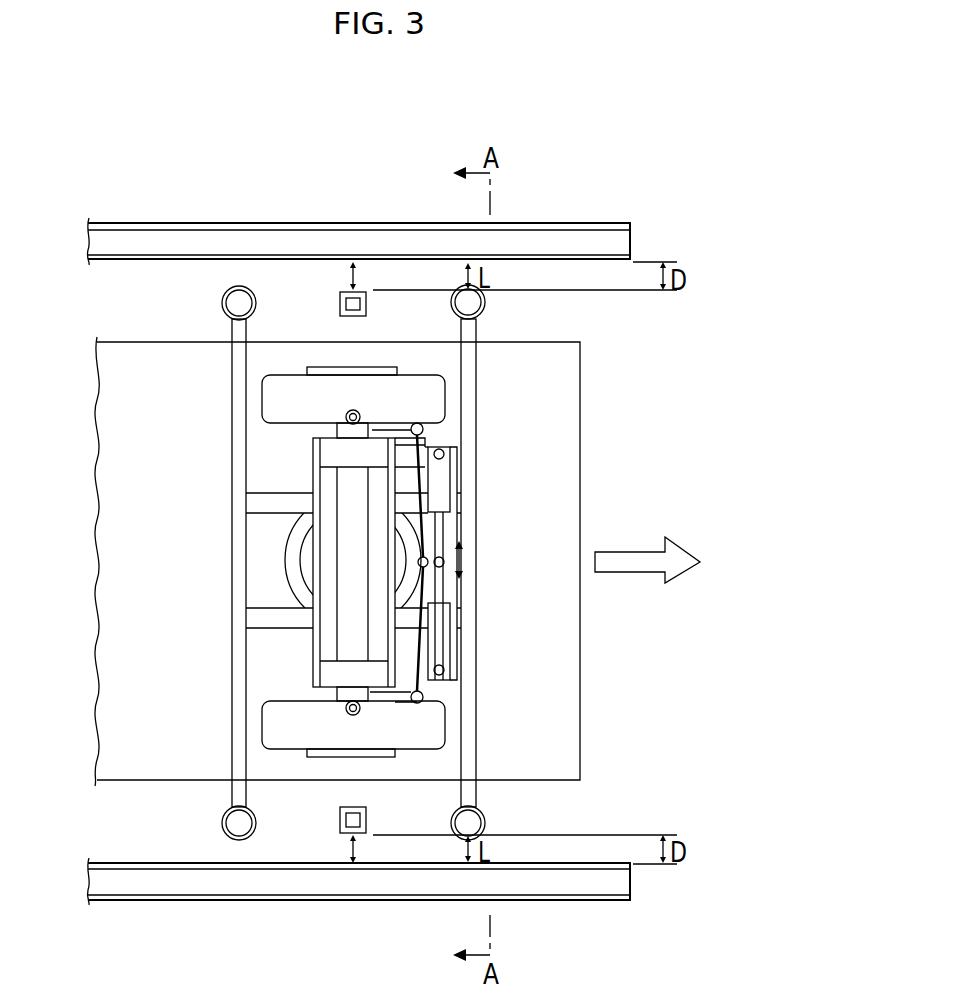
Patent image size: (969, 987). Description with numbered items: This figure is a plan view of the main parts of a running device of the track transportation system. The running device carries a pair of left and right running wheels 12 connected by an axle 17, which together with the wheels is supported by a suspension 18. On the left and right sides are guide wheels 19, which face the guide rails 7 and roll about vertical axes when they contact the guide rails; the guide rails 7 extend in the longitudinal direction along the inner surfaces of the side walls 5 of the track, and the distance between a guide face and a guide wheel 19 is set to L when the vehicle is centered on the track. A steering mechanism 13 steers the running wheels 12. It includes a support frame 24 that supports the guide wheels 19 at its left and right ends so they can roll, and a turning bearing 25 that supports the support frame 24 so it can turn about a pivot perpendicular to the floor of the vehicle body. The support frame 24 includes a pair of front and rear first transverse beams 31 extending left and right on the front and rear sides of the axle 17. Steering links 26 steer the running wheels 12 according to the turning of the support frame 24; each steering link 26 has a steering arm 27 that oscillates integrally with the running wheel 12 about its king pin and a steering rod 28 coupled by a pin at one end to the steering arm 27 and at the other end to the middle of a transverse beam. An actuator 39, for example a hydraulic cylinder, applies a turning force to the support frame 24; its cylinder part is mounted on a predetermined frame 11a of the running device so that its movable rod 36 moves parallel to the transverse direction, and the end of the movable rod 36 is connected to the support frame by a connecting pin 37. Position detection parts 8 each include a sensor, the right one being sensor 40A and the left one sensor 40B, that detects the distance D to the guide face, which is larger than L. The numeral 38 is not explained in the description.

The side wall 5 is at (359, 565).
The guide rail 7 is at (582, 240).
The position detection part 8 is at (347, 302).
The predetermined frame 11a is at (405, 455).
The running wheel 12 is at (285, 385).
The steering mechanism 13 is at (658, 499).
The axle 17 is at (348, 477).
The suspension 18 is at (330, 671).
The guide wheel 19 is at (232, 303).
The support frame 24 is at (482, 748).
The turning bearing 25 is at (290, 545).
The steering link 26 is at (526, 573).
The steering arm 27 is at (405, 432).
The steering rod 28 is at (432, 480).
The first transverse beam 31 is at (230, 382).
The movable rod 36 is at (440, 533).
The connecting pin 37 is at (443, 565).
The rod 38 is at (422, 643).
The actuator 39 is at (445, 486).
The sensor 40A is at (350, 825).
The sensor 40B is at (349, 244).